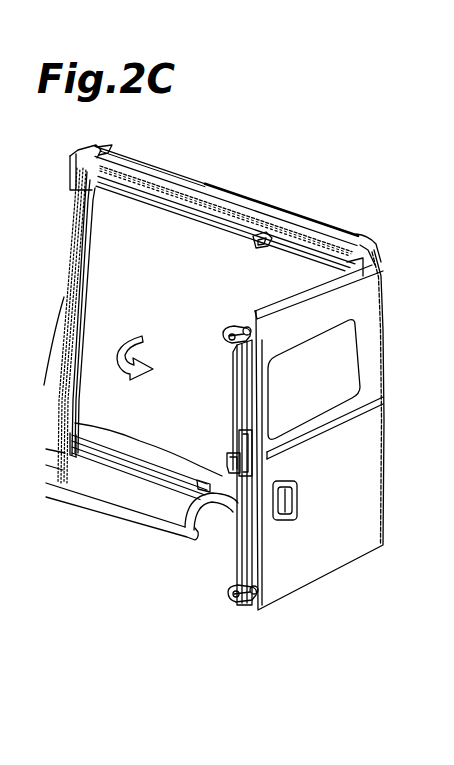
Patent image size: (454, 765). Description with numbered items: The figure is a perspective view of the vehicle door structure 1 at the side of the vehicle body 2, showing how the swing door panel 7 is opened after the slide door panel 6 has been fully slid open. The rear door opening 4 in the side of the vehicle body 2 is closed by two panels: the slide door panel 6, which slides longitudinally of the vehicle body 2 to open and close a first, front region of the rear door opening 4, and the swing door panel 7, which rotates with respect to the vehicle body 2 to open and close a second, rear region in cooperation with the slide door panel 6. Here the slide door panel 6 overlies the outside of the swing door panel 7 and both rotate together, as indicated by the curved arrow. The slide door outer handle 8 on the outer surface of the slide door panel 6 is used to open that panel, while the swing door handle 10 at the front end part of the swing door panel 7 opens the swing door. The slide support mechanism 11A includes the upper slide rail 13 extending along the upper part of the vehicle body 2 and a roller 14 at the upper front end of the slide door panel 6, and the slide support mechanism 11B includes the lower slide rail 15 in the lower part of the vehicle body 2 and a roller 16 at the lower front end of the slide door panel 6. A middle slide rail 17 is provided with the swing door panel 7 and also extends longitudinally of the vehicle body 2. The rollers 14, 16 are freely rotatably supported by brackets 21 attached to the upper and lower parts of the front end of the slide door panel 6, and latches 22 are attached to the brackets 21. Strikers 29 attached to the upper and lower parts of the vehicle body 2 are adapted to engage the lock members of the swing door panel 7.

The vehicle door structure 1 is at (307, 288).
The vehicle body 2 is at (338, 238).
The rear door opening 4 is at (102, 282).
The slide door panel 6 is at (365, 303).
The swing door panel 7 is at (243, 392).
The slide door outer handle 8 is at (289, 498).
The swing door handle 10 is at (234, 464).
The slide support mechanism 11A is at (222, 209).
The slide support mechanism 11B is at (167, 493).
The upper slide rail 13 is at (153, 207).
The roller 14 is at (225, 332).
The lower slide rail 15 is at (110, 458).
The roller 16 is at (240, 588).
The middle slide rail 17 is at (243, 444).
The bracket 21 is at (228, 343).
The latch 22 is at (242, 328).
The striker 29 is at (263, 236).